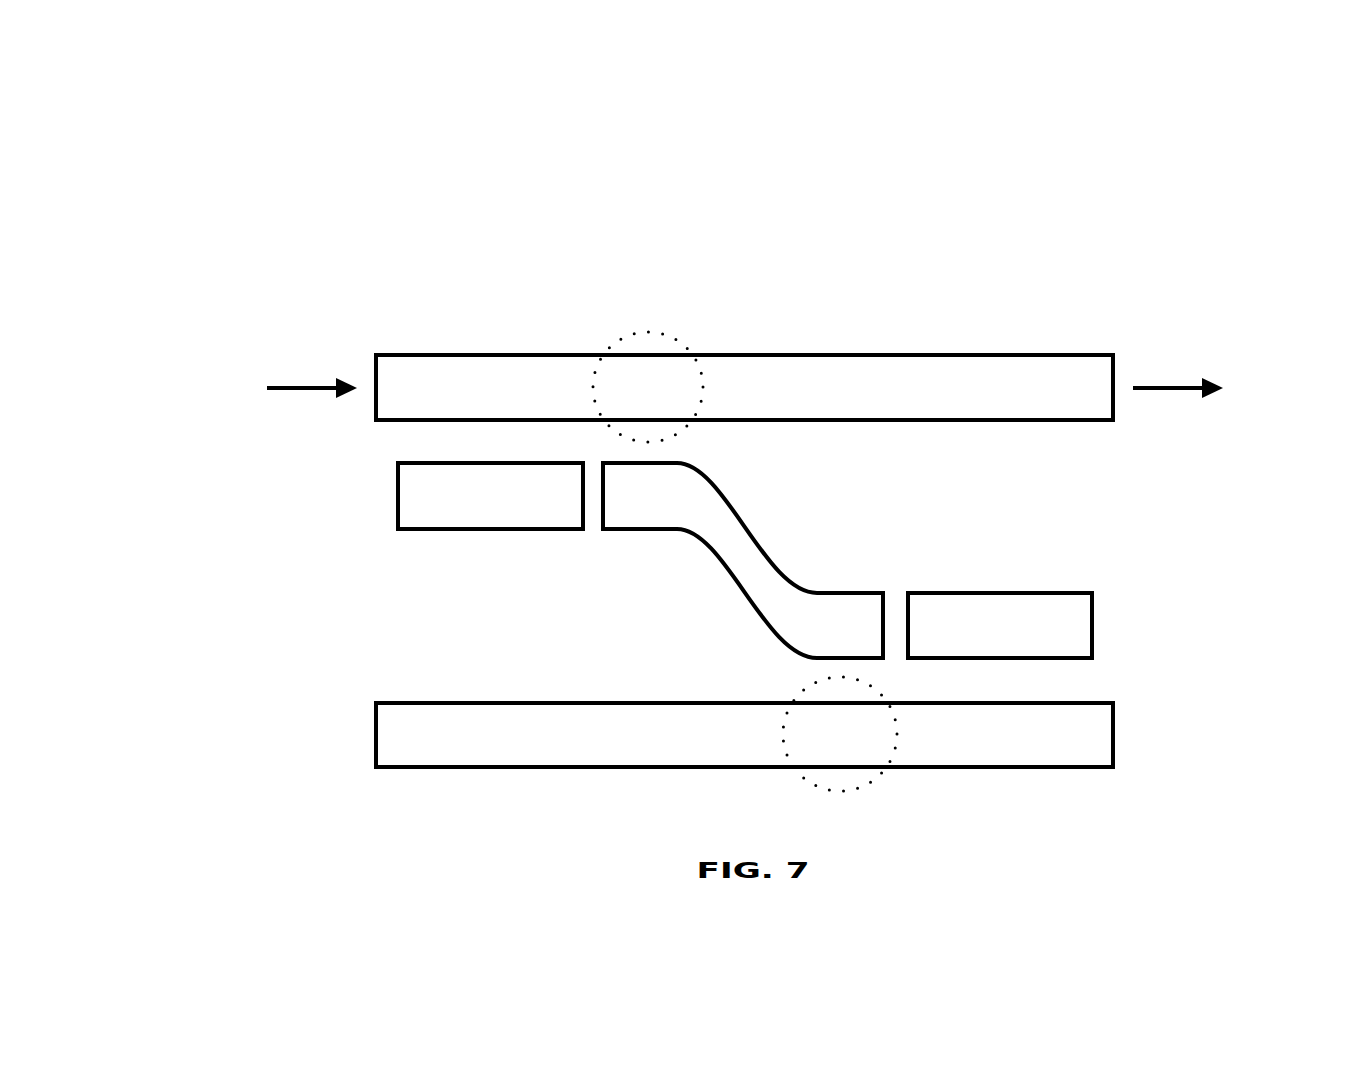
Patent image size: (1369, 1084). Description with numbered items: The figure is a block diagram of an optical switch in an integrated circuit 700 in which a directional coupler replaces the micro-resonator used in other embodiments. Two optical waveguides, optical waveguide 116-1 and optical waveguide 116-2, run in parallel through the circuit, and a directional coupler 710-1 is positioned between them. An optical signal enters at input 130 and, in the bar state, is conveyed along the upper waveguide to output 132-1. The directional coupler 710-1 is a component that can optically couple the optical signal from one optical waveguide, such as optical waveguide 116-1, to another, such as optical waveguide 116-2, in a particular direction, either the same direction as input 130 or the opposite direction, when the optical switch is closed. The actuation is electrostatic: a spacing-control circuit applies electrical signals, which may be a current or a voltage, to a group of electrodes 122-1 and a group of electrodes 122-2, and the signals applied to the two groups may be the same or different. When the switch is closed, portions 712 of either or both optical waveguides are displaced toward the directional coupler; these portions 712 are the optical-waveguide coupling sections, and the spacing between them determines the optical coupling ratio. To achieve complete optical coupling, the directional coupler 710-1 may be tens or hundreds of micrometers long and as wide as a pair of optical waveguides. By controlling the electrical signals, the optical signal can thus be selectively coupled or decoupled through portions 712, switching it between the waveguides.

The integrated circuit 700 is at (308, 182).
The optical waveguide 116-1 is at (950, 388).
The optical waveguide 116-2 is at (1080, 734).
The input 130 is at (310, 383).
The output 132-1 is at (1182, 384).
The group of electrodes 122-1 is at (495, 495).
The group of electrodes 122-2 is at (873, 454).
The directional coupler 710-1 is at (646, 454).
The portions 712 is at (703, 404).